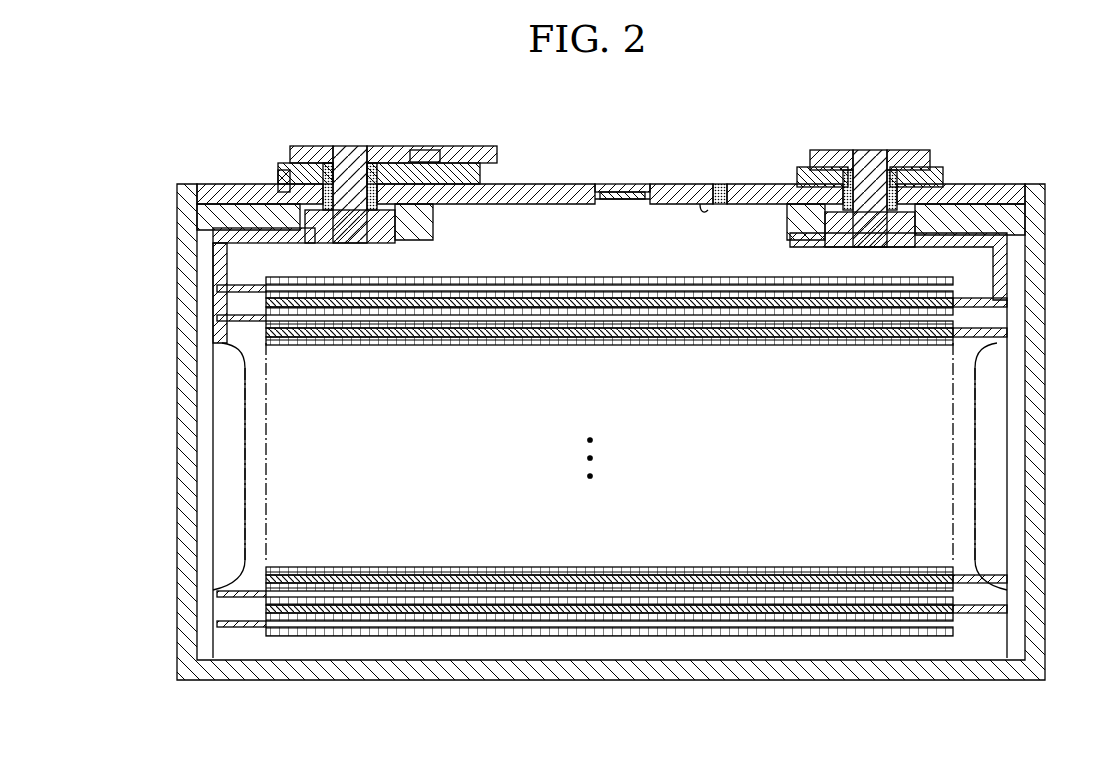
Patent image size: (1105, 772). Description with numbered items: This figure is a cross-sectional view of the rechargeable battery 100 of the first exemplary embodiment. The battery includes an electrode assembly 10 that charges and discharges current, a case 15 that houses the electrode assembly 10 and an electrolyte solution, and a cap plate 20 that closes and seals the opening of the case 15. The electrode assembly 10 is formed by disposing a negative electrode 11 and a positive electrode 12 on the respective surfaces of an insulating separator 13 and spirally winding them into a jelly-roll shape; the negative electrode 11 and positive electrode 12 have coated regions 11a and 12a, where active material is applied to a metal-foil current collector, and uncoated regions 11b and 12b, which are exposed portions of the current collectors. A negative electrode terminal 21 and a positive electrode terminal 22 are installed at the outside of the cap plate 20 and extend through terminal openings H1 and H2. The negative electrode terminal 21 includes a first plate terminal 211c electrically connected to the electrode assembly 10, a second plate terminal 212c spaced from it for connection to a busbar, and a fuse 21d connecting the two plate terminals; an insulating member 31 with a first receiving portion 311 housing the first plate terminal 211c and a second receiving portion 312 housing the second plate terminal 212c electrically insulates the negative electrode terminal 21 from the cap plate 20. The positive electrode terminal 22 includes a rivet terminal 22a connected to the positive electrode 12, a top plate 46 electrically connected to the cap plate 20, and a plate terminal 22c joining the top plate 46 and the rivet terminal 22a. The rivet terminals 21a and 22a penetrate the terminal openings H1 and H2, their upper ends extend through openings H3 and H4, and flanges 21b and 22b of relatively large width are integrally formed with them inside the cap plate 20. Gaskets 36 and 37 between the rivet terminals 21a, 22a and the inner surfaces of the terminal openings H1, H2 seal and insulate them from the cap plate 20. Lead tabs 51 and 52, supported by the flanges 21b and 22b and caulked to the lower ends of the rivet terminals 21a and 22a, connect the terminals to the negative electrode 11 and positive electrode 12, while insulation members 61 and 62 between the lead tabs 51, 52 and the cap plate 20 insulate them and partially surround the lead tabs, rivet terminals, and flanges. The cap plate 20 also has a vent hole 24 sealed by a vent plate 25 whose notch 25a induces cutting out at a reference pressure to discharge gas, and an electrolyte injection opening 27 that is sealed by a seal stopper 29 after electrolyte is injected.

The rechargeable battery 100 is at (652, 94).
The electrode assembly 10 is at (708, 640).
The negative electrode 11 is at (320, 725).
The coated region 11a is at (270, 640).
The uncoated region 11b is at (232, 640).
The positive electrode 12 is at (1000, 728).
The coated region 12a is at (845, 640).
The uncoated region 12b is at (985, 645).
The separator 13 is at (590, 638).
The case 15 is at (1045, 360).
The cap plate 20 is at (548, 184).
The negative electrode terminal 21 is at (345, 146).
The rivet terminal 21a is at (350, 245).
The flange 21b is at (395, 225).
The fuse 21d is at (415, 150).
The first plate terminal 211c is at (320, 170).
The second plate terminal 212c is at (445, 170).
The positive electrode terminal 22 is at (868, 150).
The rivet terminal 22a is at (870, 250).
The flange 22b is at (830, 225).
The plate terminal 22c is at (915, 152).
The vent hole 24 is at (620, 204).
The vent plate 25 is at (640, 192).
The notch 25a is at (612, 190).
The electrolyte injection opening 27 is at (702, 204).
The seal stopper 29 is at (720, 184).
The insulating member 31 is at (90, 112).
The first receiving portion 311 is at (300, 148).
The second receiving portion 312 is at (485, 148).
The gasket 36 is at (280, 182).
The gasket 37 is at (940, 176).
The top plate 46 is at (815, 162).
The lead tab 51 is at (213, 236).
The lead tab 52 is at (1007, 255).
The insulation member 61 is at (180, 184).
The insulation member 62 is at (1023, 200).
The terminal opening H1 is at (370, 165).
The terminal opening H2 is at (848, 170).
The opening H3 is at (330, 163).
The opening H4 is at (890, 170).